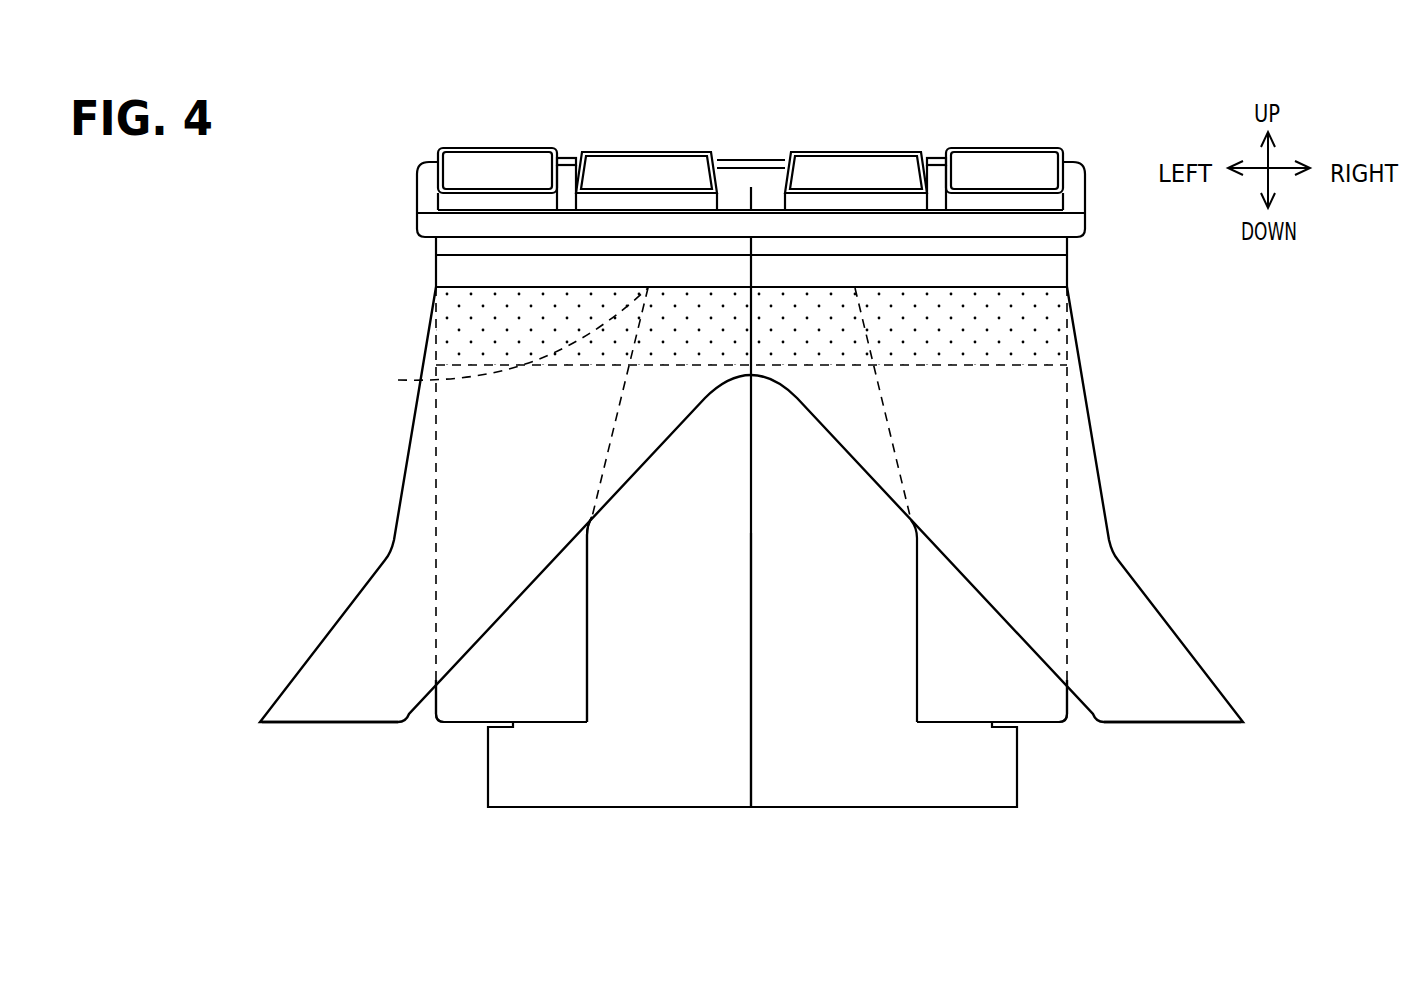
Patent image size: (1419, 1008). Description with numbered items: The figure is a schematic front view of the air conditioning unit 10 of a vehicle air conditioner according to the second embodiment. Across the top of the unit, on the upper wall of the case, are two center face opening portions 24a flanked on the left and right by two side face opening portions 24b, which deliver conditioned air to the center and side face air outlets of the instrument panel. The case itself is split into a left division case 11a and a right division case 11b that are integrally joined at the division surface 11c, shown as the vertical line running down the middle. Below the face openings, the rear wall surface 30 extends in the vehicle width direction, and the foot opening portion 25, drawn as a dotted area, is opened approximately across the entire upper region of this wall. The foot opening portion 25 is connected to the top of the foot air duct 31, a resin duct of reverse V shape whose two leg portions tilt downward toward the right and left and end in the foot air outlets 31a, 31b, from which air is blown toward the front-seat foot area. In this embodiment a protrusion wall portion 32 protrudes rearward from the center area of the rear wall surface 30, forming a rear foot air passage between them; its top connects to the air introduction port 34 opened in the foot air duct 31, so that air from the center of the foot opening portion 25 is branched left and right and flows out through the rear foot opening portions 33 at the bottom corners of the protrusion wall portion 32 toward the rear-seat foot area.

The air conditioning unit 10 is at (754, 146).
The center face opening portions 24a is at (637, 165).
The side face opening portions 24b is at (500, 165).
The foot opening portion 25 is at (485, 318).
The air introduction port 34 is at (504, 343).
The foot air duct 31 is at (1093, 432).
The foot air outlet 31a is at (347, 722).
The foot air outlet 31b is at (1157, 723).
The rear wall surface 30 is at (537, 622).
The rear foot opening portions 33 is at (487, 758).
The left division case 11a is at (457, 722).
The right division case 11b is at (1045, 725).
The division surface 11c is at (753, 533).
The protrusion wall portion 32 is at (674, 600).